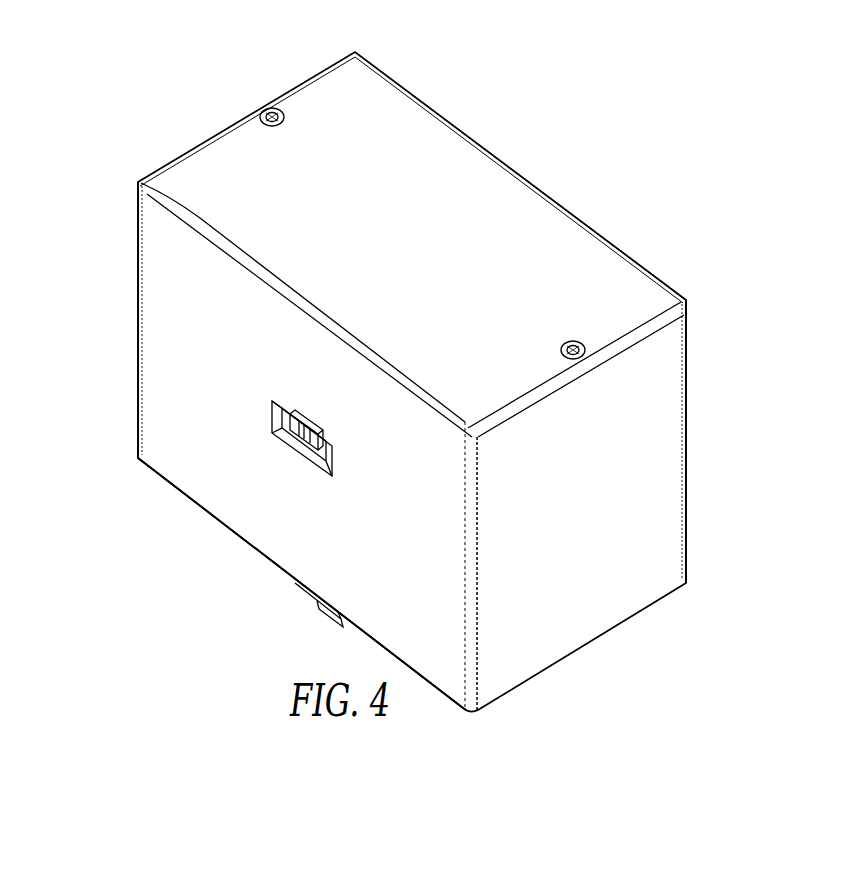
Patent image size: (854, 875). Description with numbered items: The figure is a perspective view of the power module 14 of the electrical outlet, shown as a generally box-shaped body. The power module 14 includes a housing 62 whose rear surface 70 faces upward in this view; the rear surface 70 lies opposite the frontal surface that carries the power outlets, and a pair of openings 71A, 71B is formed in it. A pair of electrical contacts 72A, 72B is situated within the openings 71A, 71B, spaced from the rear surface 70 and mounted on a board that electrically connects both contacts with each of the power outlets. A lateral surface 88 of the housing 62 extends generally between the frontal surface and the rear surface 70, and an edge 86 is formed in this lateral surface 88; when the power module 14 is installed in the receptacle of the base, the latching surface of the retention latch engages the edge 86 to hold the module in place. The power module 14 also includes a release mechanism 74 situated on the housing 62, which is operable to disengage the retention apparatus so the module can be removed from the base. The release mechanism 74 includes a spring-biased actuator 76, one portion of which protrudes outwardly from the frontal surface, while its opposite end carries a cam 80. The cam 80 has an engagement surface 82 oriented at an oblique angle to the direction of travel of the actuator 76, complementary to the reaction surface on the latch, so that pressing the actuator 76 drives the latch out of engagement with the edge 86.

The power module 14 is at (446, 116).
The housing 62 is at (590, 230).
The rear surface 70 is at (505, 186).
The opening 71A is at (562, 355).
The opening 71B is at (288, 122).
The electrical contact 72A is at (580, 343).
The electrical contact 72B is at (270, 111).
The release mechanism 74 is at (292, 589).
The actuator 76 is at (312, 608).
The cam 80 is at (331, 455).
The engagement surface 82 is at (310, 440).
The edge 86 is at (277, 423).
The lateral surface 88 is at (153, 291).